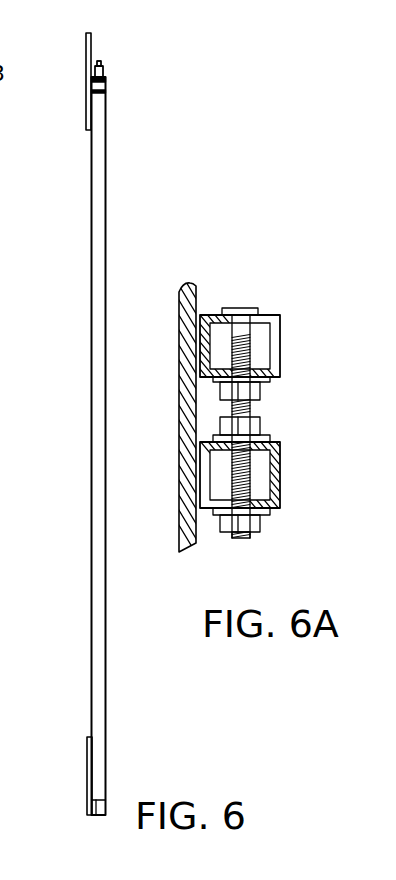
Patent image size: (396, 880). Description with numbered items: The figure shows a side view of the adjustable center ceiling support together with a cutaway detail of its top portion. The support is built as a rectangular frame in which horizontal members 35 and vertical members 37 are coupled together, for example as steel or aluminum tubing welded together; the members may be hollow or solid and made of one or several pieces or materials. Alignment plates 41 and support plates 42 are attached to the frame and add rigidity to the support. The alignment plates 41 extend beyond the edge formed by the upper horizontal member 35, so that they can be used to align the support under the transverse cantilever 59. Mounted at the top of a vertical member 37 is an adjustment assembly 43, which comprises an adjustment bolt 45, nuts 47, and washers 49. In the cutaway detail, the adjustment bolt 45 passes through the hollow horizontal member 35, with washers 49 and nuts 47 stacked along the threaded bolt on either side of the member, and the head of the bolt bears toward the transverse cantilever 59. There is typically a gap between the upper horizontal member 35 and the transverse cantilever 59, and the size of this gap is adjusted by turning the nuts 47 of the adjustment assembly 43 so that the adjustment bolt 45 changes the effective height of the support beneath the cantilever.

In FIG. 6A, the horizontal member 35 is at (281, 466).
In FIG. 6, the vertical member 37 is at (106, 272).
In FIG. 6, the alignment plate 41 is at (86, 88).
In FIG. 6A, the alignment plate 41 is at (180, 433).
In FIG. 6, the support plate 42 is at (87, 766).
In FIG. 6, the adjustment assembly 43 is at (104, 48).
In FIG. 6A, the adjustment assembly 43 is at (245, 292).
In FIG. 6, the adjustment bolt 45 is at (103, 64).
In FIG. 6A, the adjustment bolt 45 is at (243, 540).
In FIG. 6, the nut 47 is at (107, 75).
In FIG. 6A, the nut 47 is at (262, 393).
In FIG. 6A, the washer 49 is at (270, 385).
In FIG. 6A, the transverse cantilever 59 is at (280, 334).